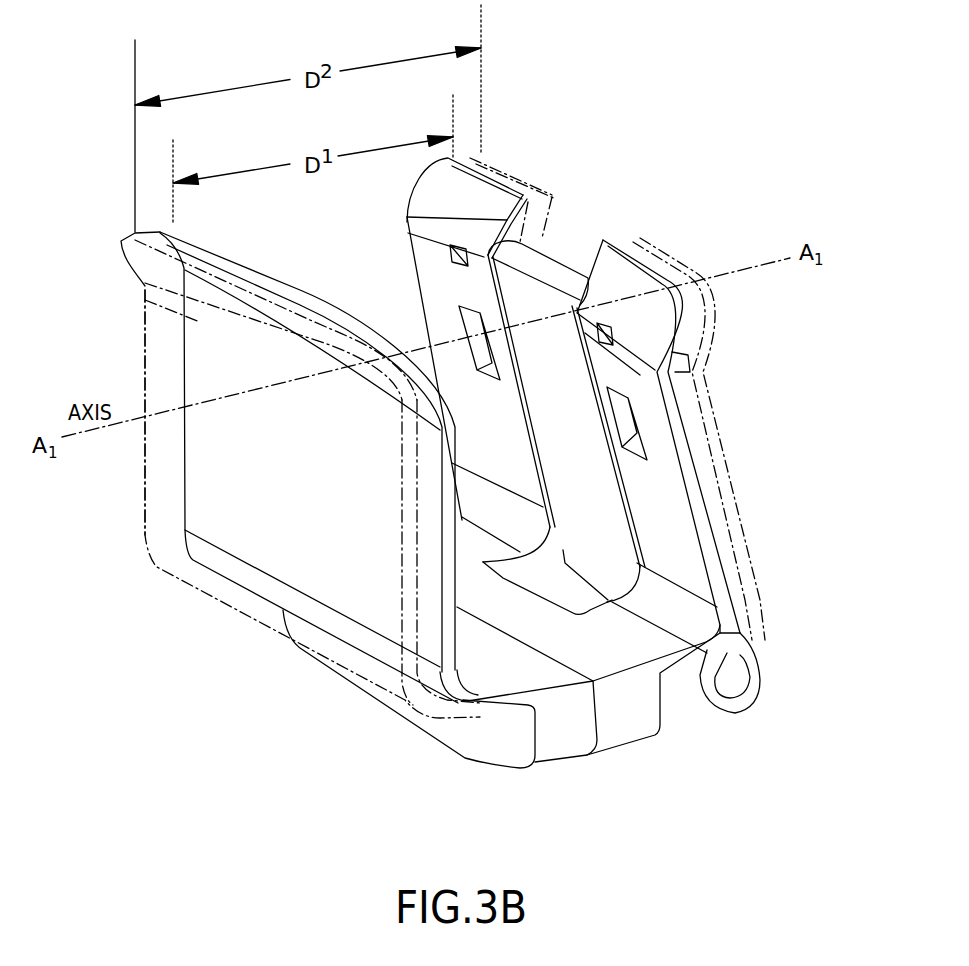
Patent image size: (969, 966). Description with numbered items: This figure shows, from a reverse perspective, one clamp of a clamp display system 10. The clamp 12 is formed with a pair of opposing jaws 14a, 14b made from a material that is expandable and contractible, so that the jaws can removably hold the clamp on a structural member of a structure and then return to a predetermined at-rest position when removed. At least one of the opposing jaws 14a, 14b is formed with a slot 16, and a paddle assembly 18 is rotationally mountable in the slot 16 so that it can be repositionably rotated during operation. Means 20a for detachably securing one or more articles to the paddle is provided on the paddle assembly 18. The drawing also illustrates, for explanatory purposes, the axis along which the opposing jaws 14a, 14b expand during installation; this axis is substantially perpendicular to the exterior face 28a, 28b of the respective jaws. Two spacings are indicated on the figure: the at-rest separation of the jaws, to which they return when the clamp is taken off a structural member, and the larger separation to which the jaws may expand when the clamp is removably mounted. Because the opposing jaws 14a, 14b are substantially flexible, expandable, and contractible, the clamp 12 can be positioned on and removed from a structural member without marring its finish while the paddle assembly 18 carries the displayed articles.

The clamp display system 10 is at (647, 107).
The clamp 12 is at (258, 679).
The opposing jaw 14a is at (410, 198).
The opposing jaw 14b is at (266, 268).
The slot 16 is at (555, 595).
The paddle assembly 18 is at (552, 433).
The means for detachably securing one or more articles to the paddle 20a is at (760, 693).
The exterior face 28a is at (693, 453).
The exterior face 28b is at (200, 355).